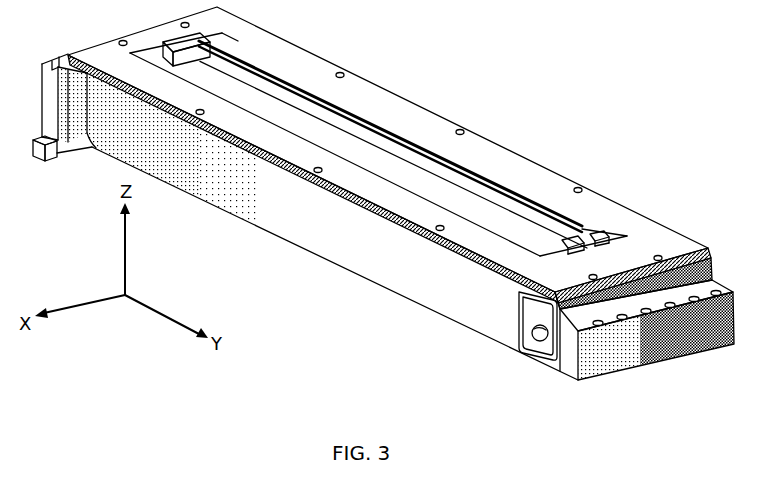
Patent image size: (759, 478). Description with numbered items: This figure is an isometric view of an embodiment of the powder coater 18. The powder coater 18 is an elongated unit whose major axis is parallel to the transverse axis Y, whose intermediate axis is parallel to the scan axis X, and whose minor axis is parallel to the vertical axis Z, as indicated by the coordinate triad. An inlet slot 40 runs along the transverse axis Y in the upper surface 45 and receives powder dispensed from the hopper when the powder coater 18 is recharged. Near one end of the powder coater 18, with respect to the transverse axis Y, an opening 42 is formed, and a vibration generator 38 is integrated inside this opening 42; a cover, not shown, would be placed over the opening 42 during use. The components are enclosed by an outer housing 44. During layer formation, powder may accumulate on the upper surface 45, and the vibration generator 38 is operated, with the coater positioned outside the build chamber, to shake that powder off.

The powder coater 18 is at (541, 127).
The vibration generator 38 is at (540, 348).
The inlet slot 40 is at (315, 117).
The opening 42 is at (555, 365).
The outer housing 44 is at (422, 285).
The upper surface 45 is at (417, 125).